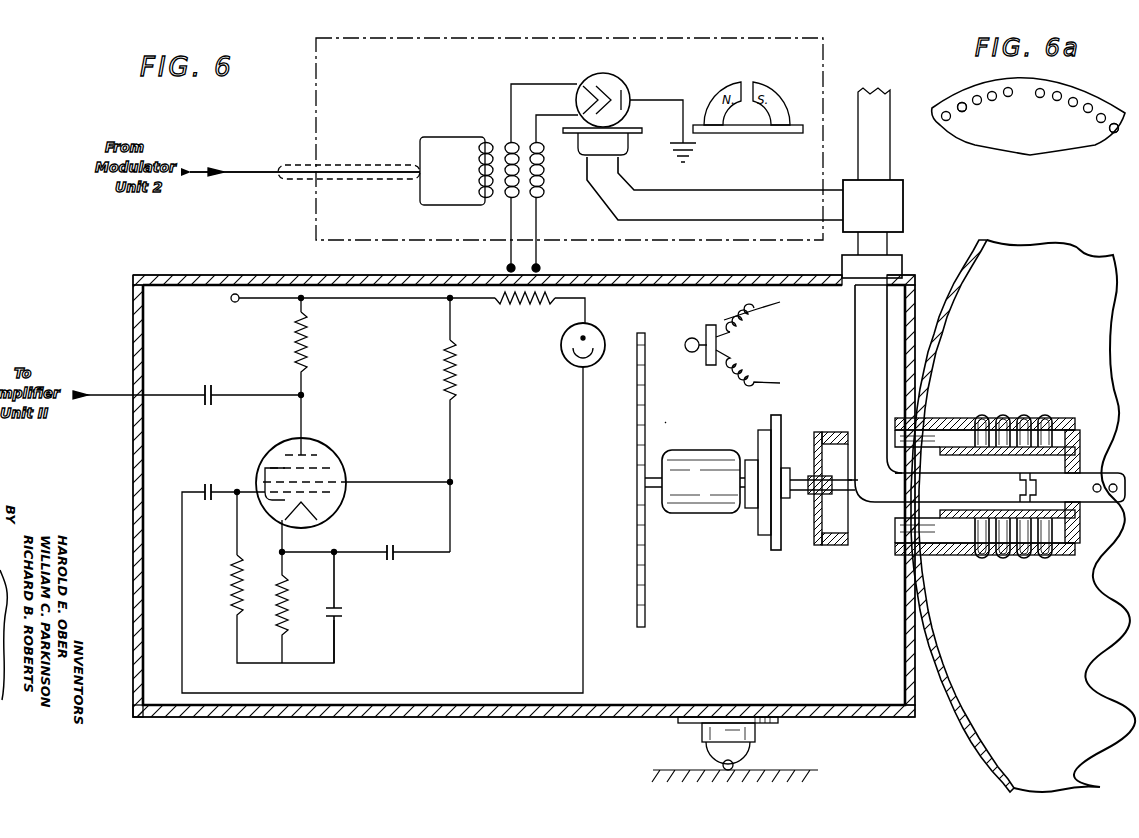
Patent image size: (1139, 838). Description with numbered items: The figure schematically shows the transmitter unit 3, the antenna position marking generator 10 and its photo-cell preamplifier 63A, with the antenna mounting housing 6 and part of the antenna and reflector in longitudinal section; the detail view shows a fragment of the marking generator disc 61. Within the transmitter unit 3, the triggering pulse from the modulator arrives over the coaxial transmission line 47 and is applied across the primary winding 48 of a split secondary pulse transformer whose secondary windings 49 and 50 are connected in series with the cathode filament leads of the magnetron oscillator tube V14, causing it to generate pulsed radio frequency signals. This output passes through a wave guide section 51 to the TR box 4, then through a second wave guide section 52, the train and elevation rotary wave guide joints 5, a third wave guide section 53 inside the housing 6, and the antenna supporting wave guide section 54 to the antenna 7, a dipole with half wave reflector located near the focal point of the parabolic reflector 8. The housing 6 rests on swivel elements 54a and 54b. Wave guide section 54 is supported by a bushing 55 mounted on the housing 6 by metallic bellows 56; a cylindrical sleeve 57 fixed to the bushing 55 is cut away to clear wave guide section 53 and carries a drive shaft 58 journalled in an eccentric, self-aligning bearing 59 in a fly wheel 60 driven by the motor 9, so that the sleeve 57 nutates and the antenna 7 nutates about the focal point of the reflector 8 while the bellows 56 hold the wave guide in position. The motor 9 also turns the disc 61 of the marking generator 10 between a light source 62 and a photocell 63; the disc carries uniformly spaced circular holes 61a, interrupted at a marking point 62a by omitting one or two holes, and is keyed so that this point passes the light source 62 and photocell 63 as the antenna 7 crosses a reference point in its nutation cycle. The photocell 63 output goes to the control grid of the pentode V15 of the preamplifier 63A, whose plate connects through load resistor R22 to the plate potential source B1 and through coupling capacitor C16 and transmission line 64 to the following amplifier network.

In FIG. 6, the transmitter unit 3 is at (742, 36).
In FIG. 6, the TR box 4 is at (890, 202).
In FIG. 6, the rotary wave guide joints 5 is at (884, 277).
In FIG. 6, the housing 6 is at (204, 276).
In FIG. 6, the antenna 7 is at (1112, 493).
In FIG. 6, the parabolic reflector 8 is at (963, 278).
In FIG. 6, the motor 9 is at (702, 495).
In FIG. 6, the marking generator 10 is at (668, 422).
In FIG. 6, the coaxial transmission line 47 is at (340, 166).
In FIG. 6, the primary winding 48 is at (486, 143).
In FIG. 6, the secondary winding 49 is at (508, 190).
In FIG. 6, the secondary winding 50 is at (542, 172).
In FIG. 6, the wave guide section 51 is at (700, 203).
In FIG. 6, the second wave guide section 52 is at (873, 250).
In FIG. 6, the third wave guide section 53 is at (868, 370).
In FIG. 6, the antenna supporting wave guide section 54 is at (1072, 486).
In FIG. 6, the swivel element 54a is at (756, 736).
In FIG. 6, the swivel element 54b is at (735, 763).
In FIG. 6, the bushing 55 is at (1066, 468).
In FIG. 6, the metallic bellows 56 is at (1012, 422).
In FIG. 6, the cylindrical sleeve 57 is at (826, 432).
In FIG. 6, the drive shaft 58 is at (797, 478).
In FIG. 6, the eccentric self-aligning bearing 59 is at (786, 500).
In FIG. 6, the fly wheel 60 is at (776, 548).
In FIG. 6, the disc 61 is at (645, 580).
In FIG. 6a, the disc 61 is at (1075, 94).
In FIG. 6a, the circular holes 61a is at (992, 101).
In FIG. 6, the light source 62 is at (696, 340).
In FIG. 6a, the marking point 62a is at (1025, 88).
In FIG. 6, the photocell 63 is at (590, 339).
In FIG. 6, the preamplifier 63A is at (404, 389).
In FIG. 6, the transmission line 64 is at (130, 392).
In FIG. 6, the magnetron oscillator tube V14 is at (629, 111).
In FIG. 6, the pentode V15 is at (343, 491).
In FIG. 6, the load resistor R22 is at (315, 346).
In FIG. 6, the coupling capacitor C16 is at (211, 417).
In FIG. 6, the source of plate potential B1 is at (240, 311).